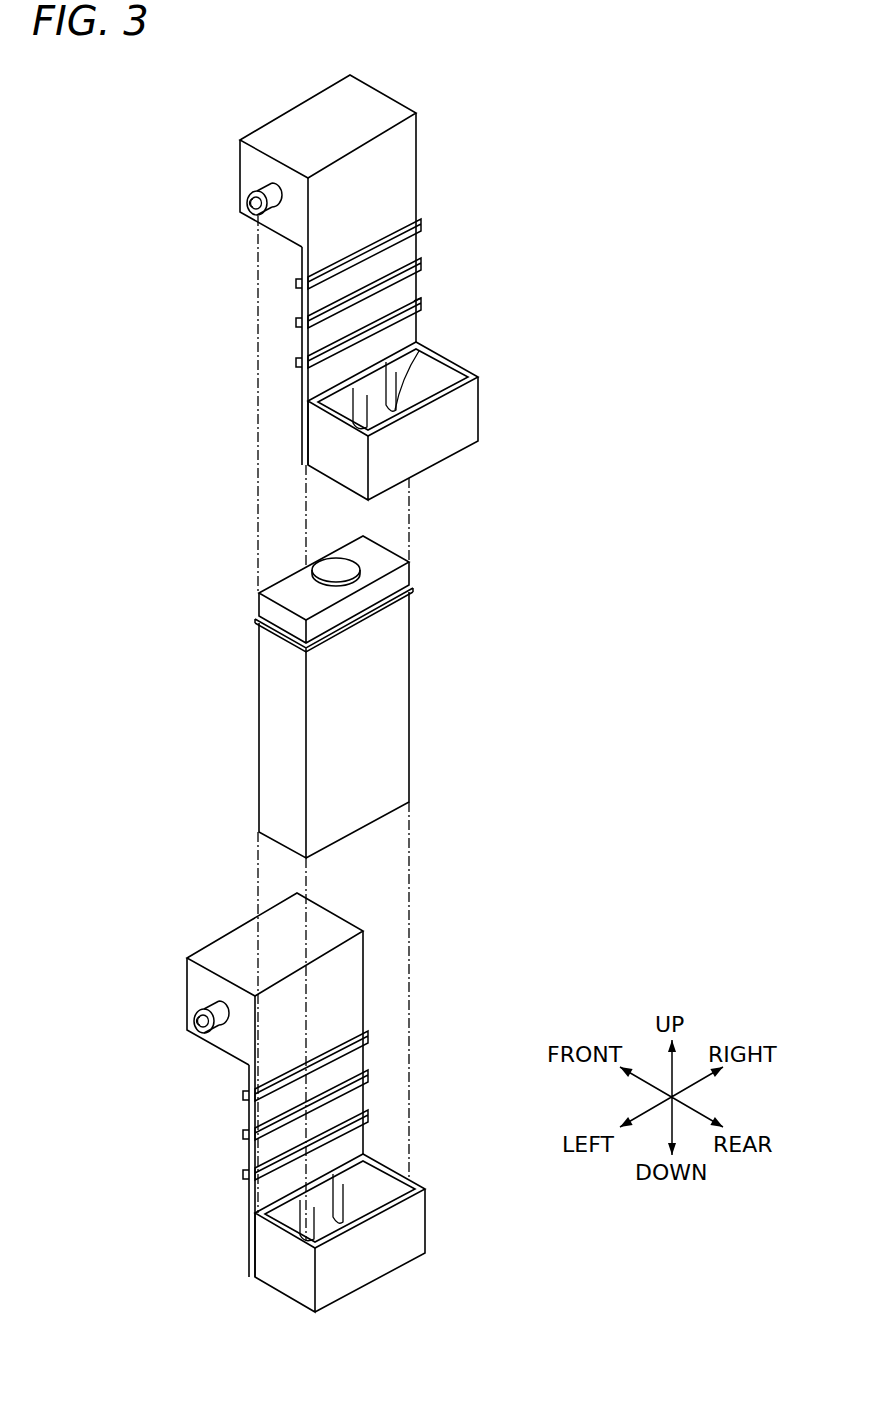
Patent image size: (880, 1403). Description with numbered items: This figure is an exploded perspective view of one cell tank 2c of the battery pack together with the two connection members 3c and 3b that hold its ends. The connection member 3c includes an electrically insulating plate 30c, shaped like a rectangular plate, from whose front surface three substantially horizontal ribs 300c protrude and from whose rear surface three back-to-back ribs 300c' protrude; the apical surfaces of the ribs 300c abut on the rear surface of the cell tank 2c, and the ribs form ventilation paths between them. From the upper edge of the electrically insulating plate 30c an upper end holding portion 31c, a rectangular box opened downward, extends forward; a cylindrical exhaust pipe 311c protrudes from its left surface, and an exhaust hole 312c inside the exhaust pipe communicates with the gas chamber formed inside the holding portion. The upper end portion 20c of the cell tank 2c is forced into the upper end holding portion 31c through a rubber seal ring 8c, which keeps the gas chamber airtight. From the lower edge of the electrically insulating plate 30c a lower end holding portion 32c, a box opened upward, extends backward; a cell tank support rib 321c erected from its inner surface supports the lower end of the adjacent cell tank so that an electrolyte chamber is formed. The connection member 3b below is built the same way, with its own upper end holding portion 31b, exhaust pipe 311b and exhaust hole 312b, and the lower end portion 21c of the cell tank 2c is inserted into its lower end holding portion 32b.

The connection member 3c is at (477, 150).
The upper end holding portion 31c is at (305, 138).
The exhaust pipe 311c is at (265, 188).
The exhaust hole 312c is at (251, 203).
The electrically insulating plate 30c is at (408, 288).
The ribs 300c is at (237, 323).
The ribs 300c' is at (478, 314).
The cell tank support rib 321c is at (432, 353).
The lower end holding portion 32c is at (450, 430).
The cell tank 2c is at (493, 623).
The upper end portion 20c is at (397, 578).
The seal ring 8c is at (255, 619).
The lower end portion 21c is at (395, 790).
The connection member 3b is at (418, 960).
The upper end holding portion 31b is at (237, 962).
The exhaust pipe 311b is at (207, 1004).
The exhaust hole 312b is at (199, 1019).
The lower end holding portion 32b is at (392, 1228).